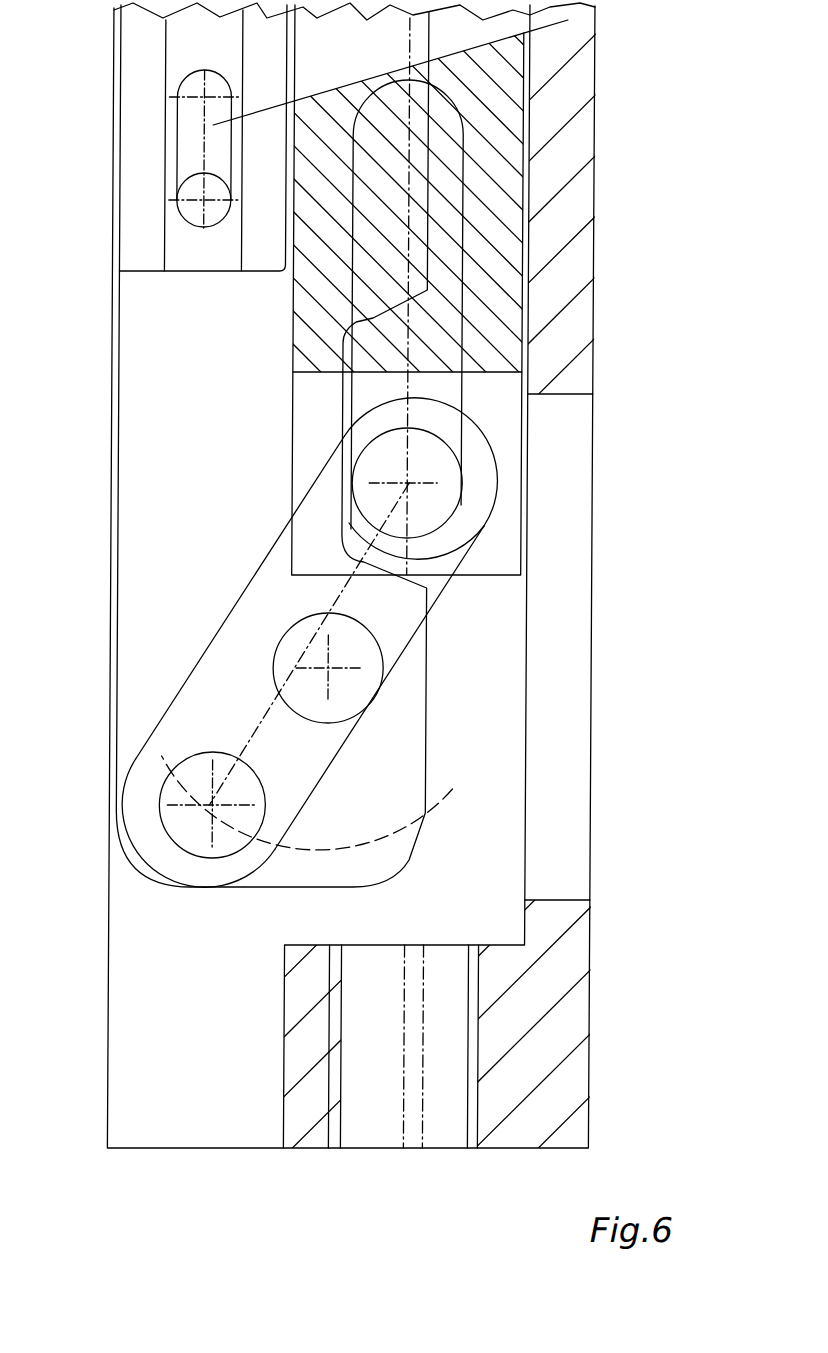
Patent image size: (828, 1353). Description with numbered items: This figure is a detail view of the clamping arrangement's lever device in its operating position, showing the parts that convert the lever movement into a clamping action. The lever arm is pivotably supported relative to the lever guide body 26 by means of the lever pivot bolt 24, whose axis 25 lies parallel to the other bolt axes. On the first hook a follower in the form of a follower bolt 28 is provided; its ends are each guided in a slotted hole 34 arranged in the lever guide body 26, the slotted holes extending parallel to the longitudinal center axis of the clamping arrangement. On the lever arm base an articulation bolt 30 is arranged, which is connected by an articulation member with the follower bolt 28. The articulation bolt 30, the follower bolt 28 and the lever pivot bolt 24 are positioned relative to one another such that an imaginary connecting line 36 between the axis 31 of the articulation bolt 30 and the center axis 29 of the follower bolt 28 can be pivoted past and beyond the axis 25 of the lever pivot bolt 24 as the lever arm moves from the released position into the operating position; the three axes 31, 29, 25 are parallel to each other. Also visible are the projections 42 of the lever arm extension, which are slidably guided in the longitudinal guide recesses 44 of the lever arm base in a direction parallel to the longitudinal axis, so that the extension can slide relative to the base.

The lever pivot bolt 24 is at (358, 693).
The axis of the lever pivot bolt 25 is at (332, 668).
The lever guide body 26 is at (570, 352).
The follower bolt 28 is at (446, 508).
The center axis of the follower bolt 29 is at (410, 483).
The articulation bolt 30 is at (174, 796).
The axis of the articulation bolt 31 is at (217, 805).
The slotted hole 34 is at (458, 397).
The imaginary connecting line 36 is at (266, 720).
The projection 42 is at (186, 206).
The longitudinal guide recess 44 is at (184, 146).